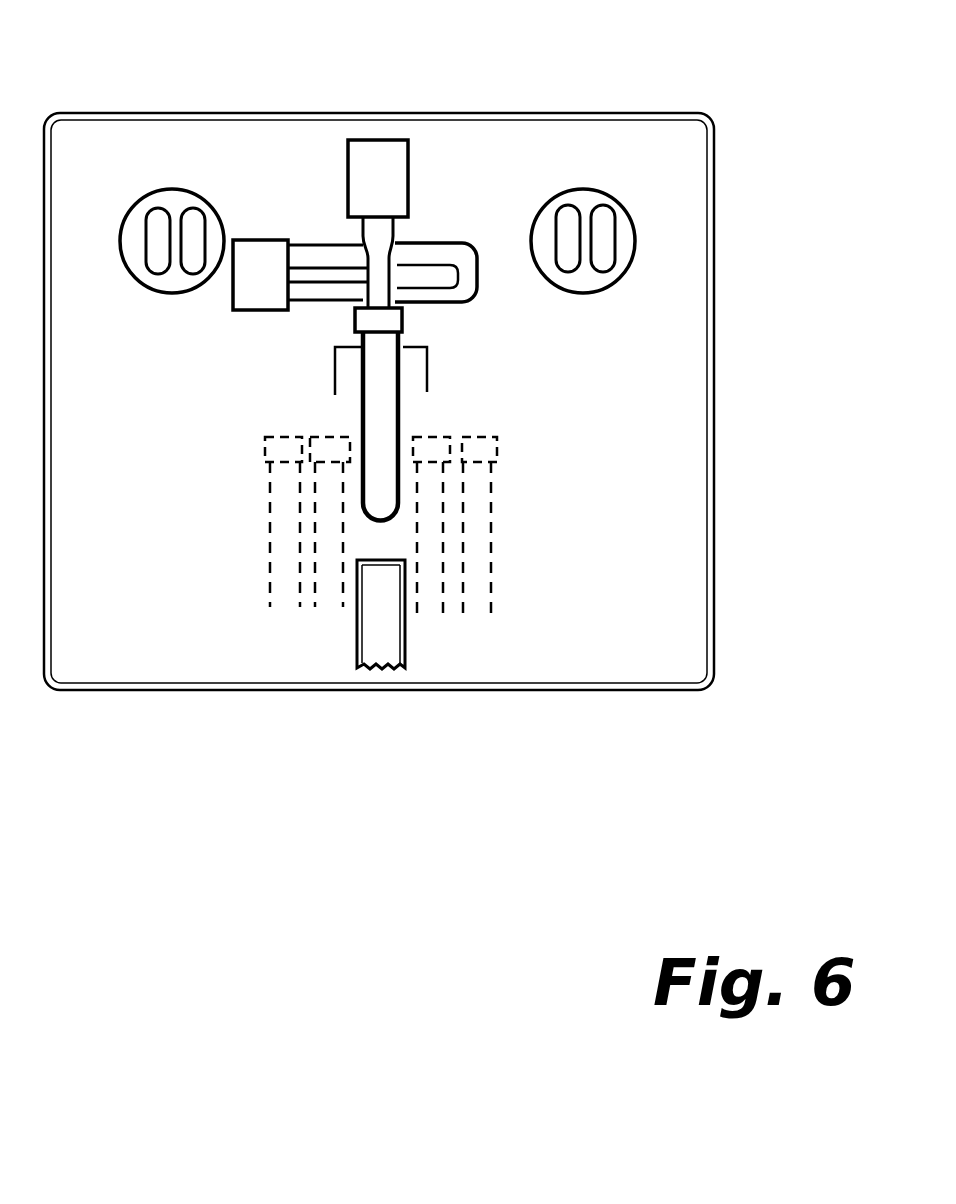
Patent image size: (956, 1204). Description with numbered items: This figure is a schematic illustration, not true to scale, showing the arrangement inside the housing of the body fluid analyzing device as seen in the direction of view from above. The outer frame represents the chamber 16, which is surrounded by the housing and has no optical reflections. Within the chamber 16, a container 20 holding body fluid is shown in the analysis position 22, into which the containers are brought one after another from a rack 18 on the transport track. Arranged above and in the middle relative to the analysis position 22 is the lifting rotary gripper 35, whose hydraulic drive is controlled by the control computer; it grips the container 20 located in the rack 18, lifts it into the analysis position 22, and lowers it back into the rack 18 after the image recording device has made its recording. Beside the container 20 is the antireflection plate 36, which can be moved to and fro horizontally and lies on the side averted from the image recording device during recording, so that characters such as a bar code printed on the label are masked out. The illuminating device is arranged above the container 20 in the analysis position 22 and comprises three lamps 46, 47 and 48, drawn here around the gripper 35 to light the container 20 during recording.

The chamber 16 is at (155, 615).
The rack 18 is at (357, 635).
The container 20 is at (385, 415).
The analysis position 22 is at (275, 358).
The lifting rotary gripper 35 is at (380, 173).
The antireflection plate 36 is at (420, 364).
The lamp 46 is at (173, 190).
The lamp 47 is at (590, 190).
The lamp 48 is at (262, 262).